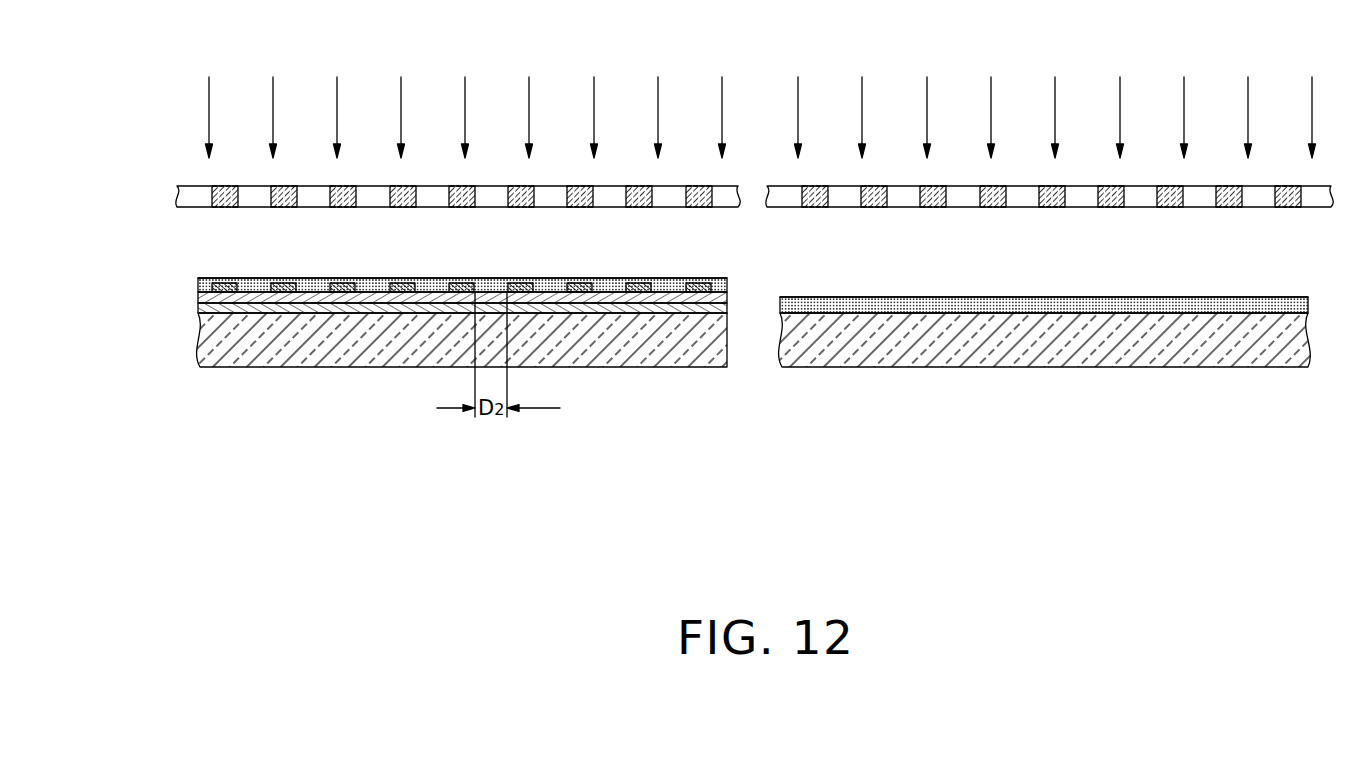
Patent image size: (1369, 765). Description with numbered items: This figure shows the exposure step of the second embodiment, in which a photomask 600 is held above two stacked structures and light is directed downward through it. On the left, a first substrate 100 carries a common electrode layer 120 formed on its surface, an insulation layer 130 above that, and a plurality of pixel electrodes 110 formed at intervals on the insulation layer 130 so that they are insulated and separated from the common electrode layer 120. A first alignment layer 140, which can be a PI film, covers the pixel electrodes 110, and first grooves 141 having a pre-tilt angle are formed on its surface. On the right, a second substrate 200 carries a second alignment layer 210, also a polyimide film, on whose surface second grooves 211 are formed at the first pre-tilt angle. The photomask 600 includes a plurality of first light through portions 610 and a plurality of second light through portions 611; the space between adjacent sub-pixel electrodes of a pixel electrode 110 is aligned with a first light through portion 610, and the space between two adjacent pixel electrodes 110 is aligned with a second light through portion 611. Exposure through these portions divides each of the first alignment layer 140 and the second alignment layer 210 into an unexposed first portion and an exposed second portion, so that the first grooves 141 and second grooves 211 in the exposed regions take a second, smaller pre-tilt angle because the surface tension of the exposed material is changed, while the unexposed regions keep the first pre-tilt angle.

The first substrate 100 is at (320, 347).
The pixel electrodes 110 is at (578, 278).
The common electrode layer 120 is at (198, 308).
The insulation layer 130 is at (198, 290).
The first alignment layer 140 is at (476, 259).
The first grooves 141 is at (702, 281).
The second substrate 200 is at (1153, 352).
The second alignment layer 210 is at (1073, 277).
The second grooves 211 is at (1293, 300).
The photomask 600 is at (756, 182).
The first light through portions 610 is at (227, 186).
The second light through portions 611 is at (258, 198).